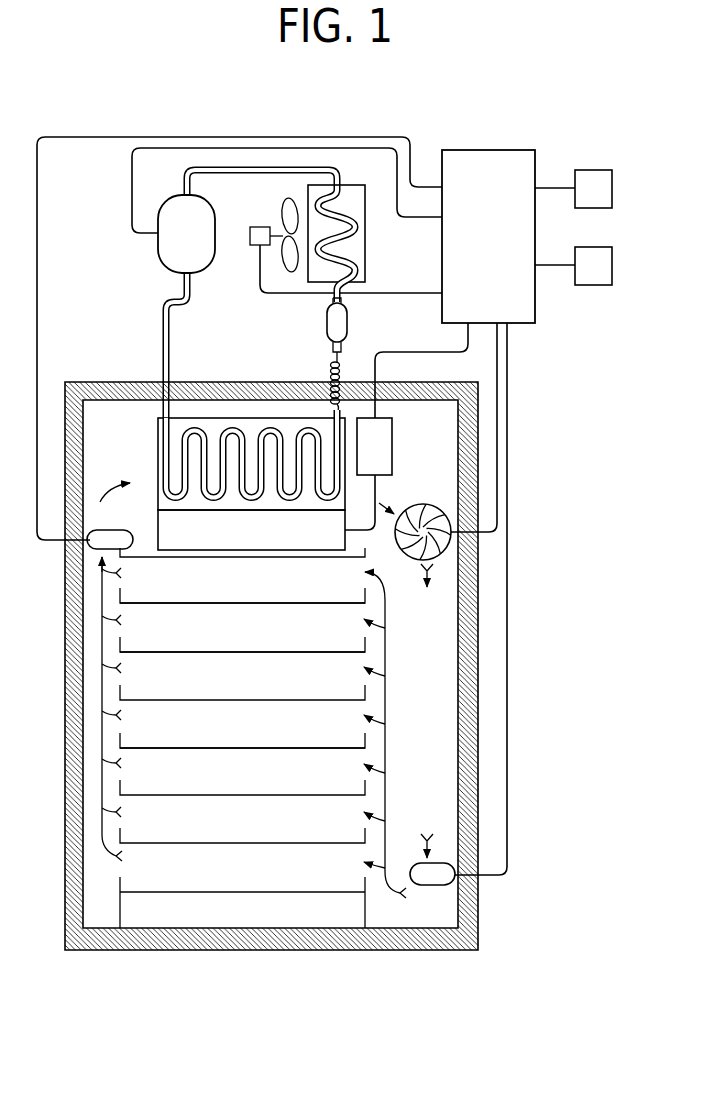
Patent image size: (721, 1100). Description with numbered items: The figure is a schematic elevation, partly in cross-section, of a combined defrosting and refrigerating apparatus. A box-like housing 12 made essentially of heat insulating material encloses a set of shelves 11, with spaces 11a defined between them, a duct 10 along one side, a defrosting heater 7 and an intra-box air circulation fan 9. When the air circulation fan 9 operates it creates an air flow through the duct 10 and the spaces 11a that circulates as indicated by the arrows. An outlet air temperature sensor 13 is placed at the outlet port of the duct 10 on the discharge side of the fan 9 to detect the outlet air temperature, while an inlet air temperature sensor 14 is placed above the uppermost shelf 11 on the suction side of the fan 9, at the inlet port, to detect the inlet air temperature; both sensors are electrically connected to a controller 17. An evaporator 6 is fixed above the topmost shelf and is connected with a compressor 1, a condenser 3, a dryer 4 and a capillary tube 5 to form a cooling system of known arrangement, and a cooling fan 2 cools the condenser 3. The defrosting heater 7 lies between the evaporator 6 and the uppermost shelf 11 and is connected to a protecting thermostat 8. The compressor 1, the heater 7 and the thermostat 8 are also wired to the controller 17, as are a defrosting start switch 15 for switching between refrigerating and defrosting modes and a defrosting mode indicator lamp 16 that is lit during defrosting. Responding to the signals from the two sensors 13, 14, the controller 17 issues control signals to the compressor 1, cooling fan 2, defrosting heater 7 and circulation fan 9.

The compressor 1 is at (160, 263).
The cooling fan 2 is at (283, 212).
The condenser 3 is at (366, 236).
The dryer 4 is at (348, 312).
The capillary tube 5 is at (325, 370).
The evaporator 6 is at (158, 449).
The defrosting heater 7 is at (158, 530).
The thermostat 8 is at (392, 432).
The intra-box air circulation fan 9 is at (450, 545).
The duct 10 is at (440, 682).
The shelves 11 is at (120, 747).
The spaces 11a is at (270, 593).
The box-like housing 12 is at (132, 952).
The temperature sensor (Th1) 13 is at (440, 886).
The temperature sensor (Th2) 14 is at (88, 545).
The defrosting start switch 15 is at (612, 188).
The defrosting mode indicator lamp 16 is at (612, 265).
The controller 17 is at (483, 150).